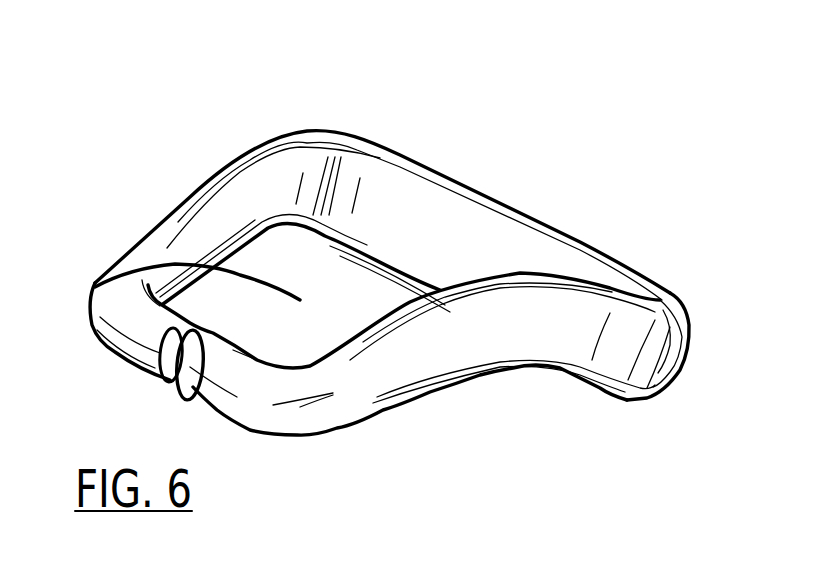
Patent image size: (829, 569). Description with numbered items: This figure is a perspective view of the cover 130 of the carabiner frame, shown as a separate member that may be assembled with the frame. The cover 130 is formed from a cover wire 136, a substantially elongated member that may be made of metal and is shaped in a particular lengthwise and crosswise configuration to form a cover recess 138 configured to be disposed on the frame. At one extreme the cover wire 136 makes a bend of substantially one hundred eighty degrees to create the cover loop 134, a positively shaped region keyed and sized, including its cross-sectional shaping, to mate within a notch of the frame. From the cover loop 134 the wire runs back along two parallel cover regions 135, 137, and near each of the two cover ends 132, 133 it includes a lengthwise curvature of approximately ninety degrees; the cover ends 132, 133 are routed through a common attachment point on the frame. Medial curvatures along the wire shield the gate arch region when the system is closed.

The cover 130 is at (152, 55).
The cover end 132 is at (195, 402).
The cover end 133 is at (153, 377).
The cover loop 134 is at (583, 248).
The parallel cover region 135 is at (202, 430).
The cover wire 136 is at (468, 320).
The parallel cover region 137 is at (553, 185).
The cover recess 138 is at (100, 278).